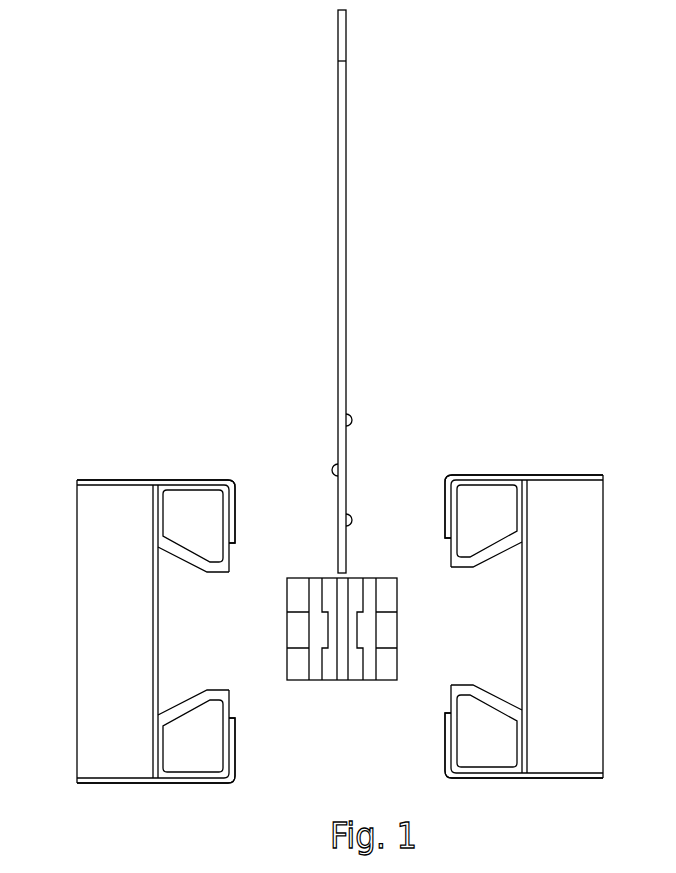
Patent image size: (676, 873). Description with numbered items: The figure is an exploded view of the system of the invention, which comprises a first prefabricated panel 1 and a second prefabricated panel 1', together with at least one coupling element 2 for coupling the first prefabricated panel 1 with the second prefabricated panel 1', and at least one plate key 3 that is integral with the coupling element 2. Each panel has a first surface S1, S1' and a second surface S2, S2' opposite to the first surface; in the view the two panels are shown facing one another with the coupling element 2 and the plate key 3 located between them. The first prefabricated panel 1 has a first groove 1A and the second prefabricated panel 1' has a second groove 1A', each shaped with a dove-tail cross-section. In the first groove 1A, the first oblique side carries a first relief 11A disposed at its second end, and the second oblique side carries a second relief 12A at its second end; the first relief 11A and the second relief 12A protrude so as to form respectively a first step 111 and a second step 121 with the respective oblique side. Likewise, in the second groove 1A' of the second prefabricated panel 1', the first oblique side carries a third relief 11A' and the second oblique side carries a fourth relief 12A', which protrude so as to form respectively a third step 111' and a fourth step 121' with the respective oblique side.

The first prefabricated panel 1 is at (128, 591).
The second prefabricated panel 1' is at (543, 583).
The coupling element 2 is at (330, 690).
The plate key 3 is at (358, 228).
The first surface S1 is at (156, 758).
The second surface S2 is at (156, 503).
The first groove 1A is at (218, 631).
The first relief 11A is at (193, 563).
The first step 111 is at (193, 578).
The second relief 12A is at (218, 709).
The second step 121 is at (193, 689).
The first surface S1' is at (524, 756).
The second surface S2' is at (524, 497).
The second groove 1A' is at (466, 626).
The third relief 11A' is at (463, 552).
The third step 111' is at (486, 574).
The fourth relief 12A' is at (485, 698).
The fourth step 121' is at (486, 684).